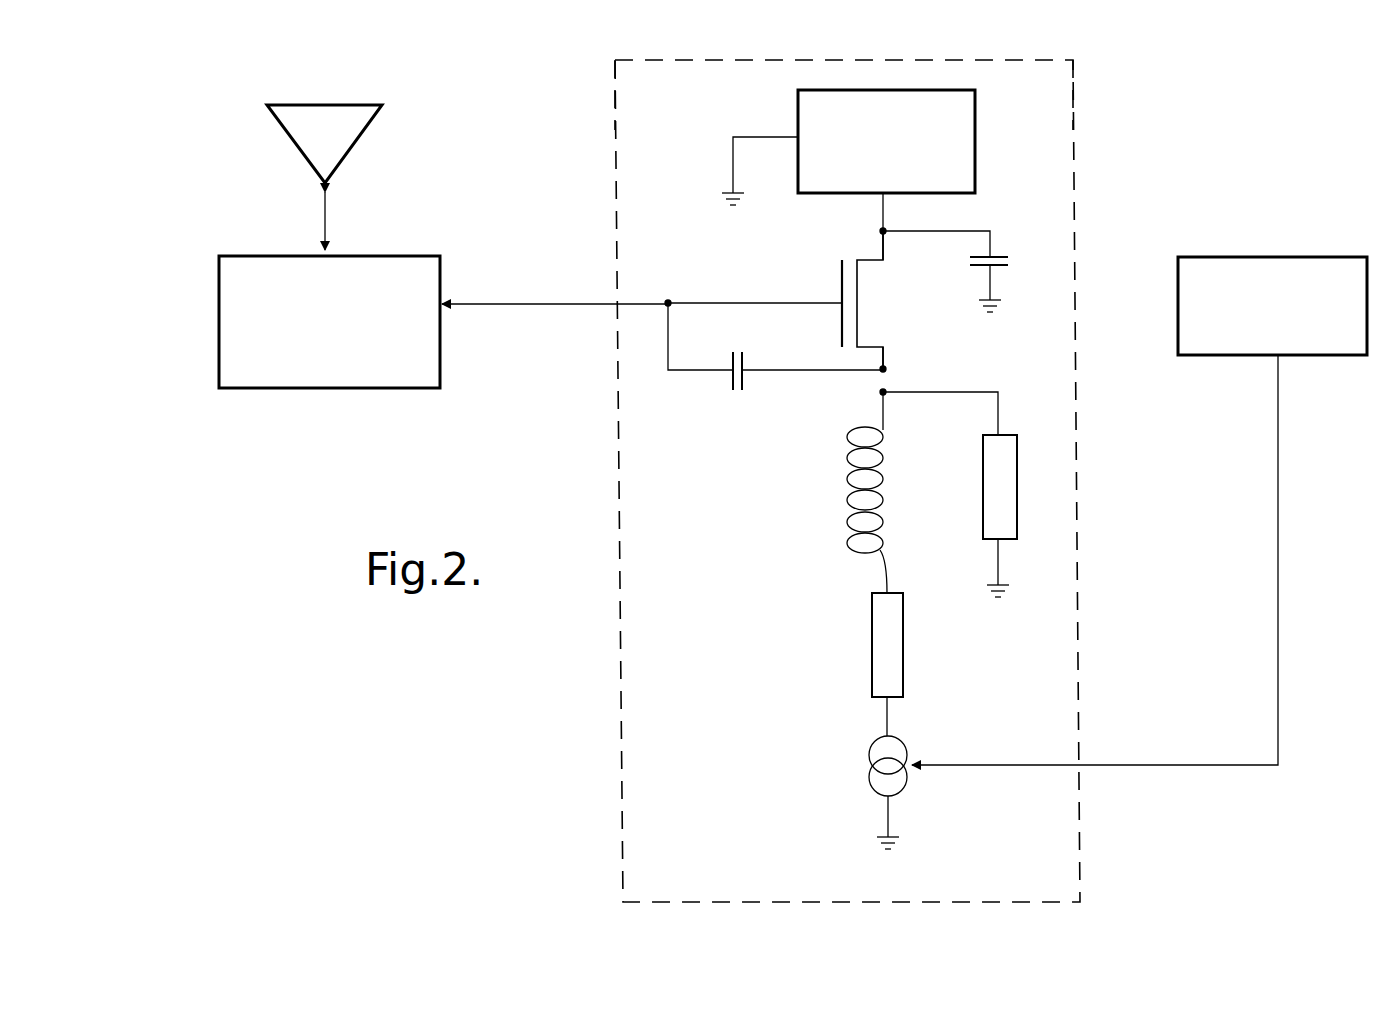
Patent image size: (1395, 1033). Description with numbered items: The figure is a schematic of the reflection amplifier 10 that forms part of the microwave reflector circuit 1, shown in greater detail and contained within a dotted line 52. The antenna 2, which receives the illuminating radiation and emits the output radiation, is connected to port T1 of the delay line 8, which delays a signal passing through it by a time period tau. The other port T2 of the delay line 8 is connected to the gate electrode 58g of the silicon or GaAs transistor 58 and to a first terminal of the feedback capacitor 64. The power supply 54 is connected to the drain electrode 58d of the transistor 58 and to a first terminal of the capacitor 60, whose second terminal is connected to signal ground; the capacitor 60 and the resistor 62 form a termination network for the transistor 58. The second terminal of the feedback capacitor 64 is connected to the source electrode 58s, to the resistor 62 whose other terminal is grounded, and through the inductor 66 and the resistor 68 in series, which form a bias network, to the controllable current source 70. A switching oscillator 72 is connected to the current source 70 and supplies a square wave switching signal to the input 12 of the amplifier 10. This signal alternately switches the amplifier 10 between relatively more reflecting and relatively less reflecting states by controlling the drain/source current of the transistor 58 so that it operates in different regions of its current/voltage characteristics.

The reflector circuit 1 is at (577, 102).
The antenna 2 is at (314, 122).
The delay line 8 is at (262, 368).
The reflection amplifier 10 is at (1052, 73).
The input 12 is at (1080, 768).
The dotted line 52 is at (1075, 103).
The power supply 54 is at (958, 147).
The transistor 58 is at (836, 257).
The drain electrode 58d is at (911, 257).
The source electrode 58s is at (907, 349).
The gate electrode 58g is at (753, 318).
The capacitor 60 is at (1000, 256).
The resistor 62 is at (998, 502).
The feedback capacitor 64 is at (733, 382).
The inductor 66 is at (850, 497).
The resistor 68 is at (880, 647).
The controllable current source 70 is at (868, 766).
The switching oscillator 72 is at (1212, 266).
The signal connection port T1 is at (346, 221).
The signal connection port T2 is at (555, 290).